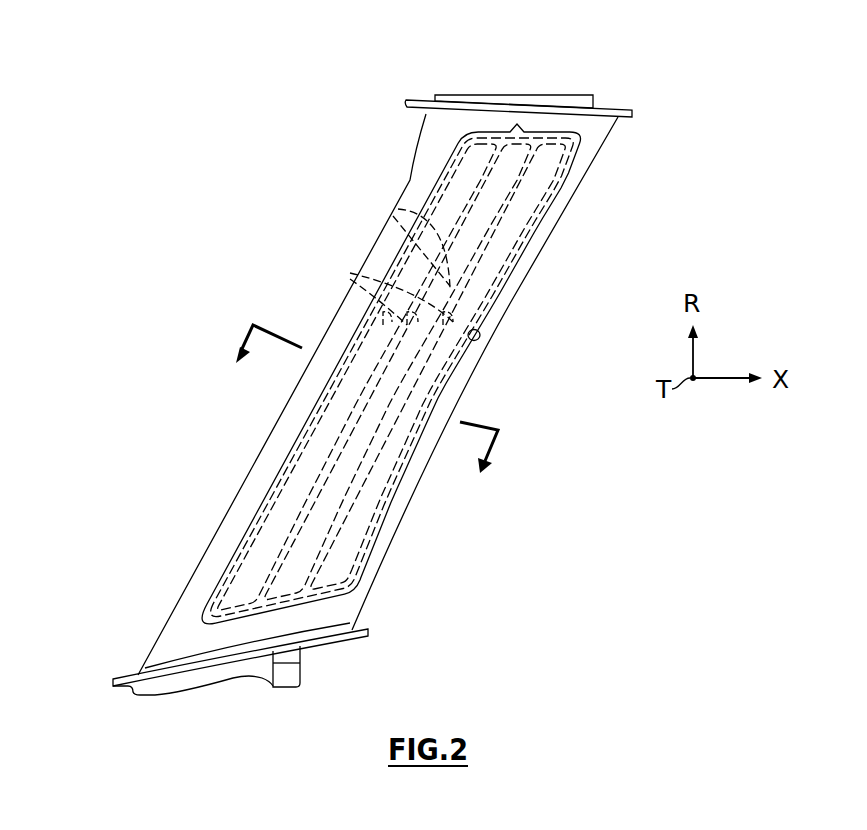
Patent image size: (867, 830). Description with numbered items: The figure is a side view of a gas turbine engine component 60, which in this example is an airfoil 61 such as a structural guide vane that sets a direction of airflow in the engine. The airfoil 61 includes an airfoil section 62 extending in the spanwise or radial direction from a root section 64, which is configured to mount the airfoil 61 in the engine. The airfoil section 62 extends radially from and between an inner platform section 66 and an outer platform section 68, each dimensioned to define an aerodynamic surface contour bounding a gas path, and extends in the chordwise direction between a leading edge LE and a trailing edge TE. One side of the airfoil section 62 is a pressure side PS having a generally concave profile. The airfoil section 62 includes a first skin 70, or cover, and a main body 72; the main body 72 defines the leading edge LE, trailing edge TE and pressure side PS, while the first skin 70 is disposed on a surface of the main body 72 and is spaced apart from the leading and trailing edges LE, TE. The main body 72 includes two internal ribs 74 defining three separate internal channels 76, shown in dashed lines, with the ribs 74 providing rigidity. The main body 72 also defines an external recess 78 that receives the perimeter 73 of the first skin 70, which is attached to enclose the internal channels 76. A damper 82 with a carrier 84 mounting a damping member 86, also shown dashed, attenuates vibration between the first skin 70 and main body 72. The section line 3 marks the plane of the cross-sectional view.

The gas turbine engine component 60 is at (283, 57).
The airfoil 61 is at (441, 84).
The airfoil section 62 is at (508, 307).
The root section 64 is at (300, 673).
The inner platform section 66 is at (352, 626).
The outer platform section 68 is at (630, 120).
The first skin 70 is at (523, 208).
The main body 72 is at (552, 233).
The perimeter 73 is at (472, 360).
The internal ribs 74 is at (398, 209).
The internal channels 76 is at (352, 274).
The external recess 78 is at (482, 341).
The damper 82 is at (444, 377).
The carrier 84 is at (444, 377).
The damping member 86 is at (504, 281).
The section line 3- 3 is at (376, 379).
The leading edge LE is at (266, 439).
The trailing edge TE is at (418, 486).
The pressure side PS is at (362, 557).